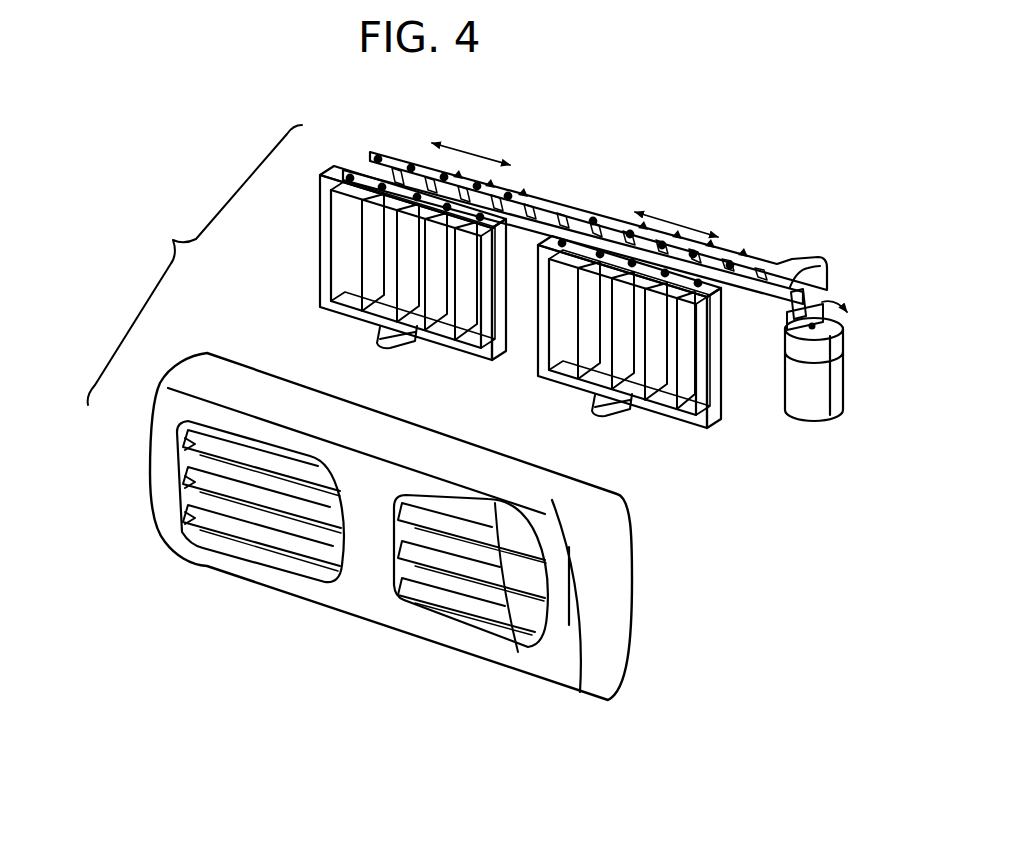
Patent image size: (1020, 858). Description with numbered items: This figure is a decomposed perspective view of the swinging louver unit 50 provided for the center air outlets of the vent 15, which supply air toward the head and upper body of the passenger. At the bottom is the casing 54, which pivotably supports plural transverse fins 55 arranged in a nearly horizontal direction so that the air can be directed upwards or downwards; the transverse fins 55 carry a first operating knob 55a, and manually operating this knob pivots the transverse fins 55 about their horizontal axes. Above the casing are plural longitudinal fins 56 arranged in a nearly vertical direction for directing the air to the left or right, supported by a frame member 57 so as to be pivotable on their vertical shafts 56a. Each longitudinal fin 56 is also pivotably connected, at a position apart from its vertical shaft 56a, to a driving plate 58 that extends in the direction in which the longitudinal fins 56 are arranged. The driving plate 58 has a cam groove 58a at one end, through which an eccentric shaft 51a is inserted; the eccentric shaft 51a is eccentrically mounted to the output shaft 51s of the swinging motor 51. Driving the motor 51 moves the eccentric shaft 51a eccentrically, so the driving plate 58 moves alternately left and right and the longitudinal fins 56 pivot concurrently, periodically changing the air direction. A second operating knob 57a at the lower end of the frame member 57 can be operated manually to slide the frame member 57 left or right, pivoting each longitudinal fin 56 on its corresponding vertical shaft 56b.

The vent 15 is at (246, 436).
The swinging louver unit 50 is at (172, 238).
The swinging motor 51 is at (822, 414).
The eccentric shaft 51a is at (832, 292).
The output shaft 51s is at (783, 341).
The casing 54 is at (153, 440).
The transverse fins 55 is at (272, 537).
The first operating knob 55a is at (178, 498).
The longitudinal fins 56 is at (343, 224).
The vertical shafts 56a is at (382, 184).
The vertical shafts 56b is at (380, 157).
The frame member 57 is at (320, 212).
The second operating knob 57a is at (402, 347).
The driving plate 58 is at (542, 195).
The cam groove 58a is at (812, 259).